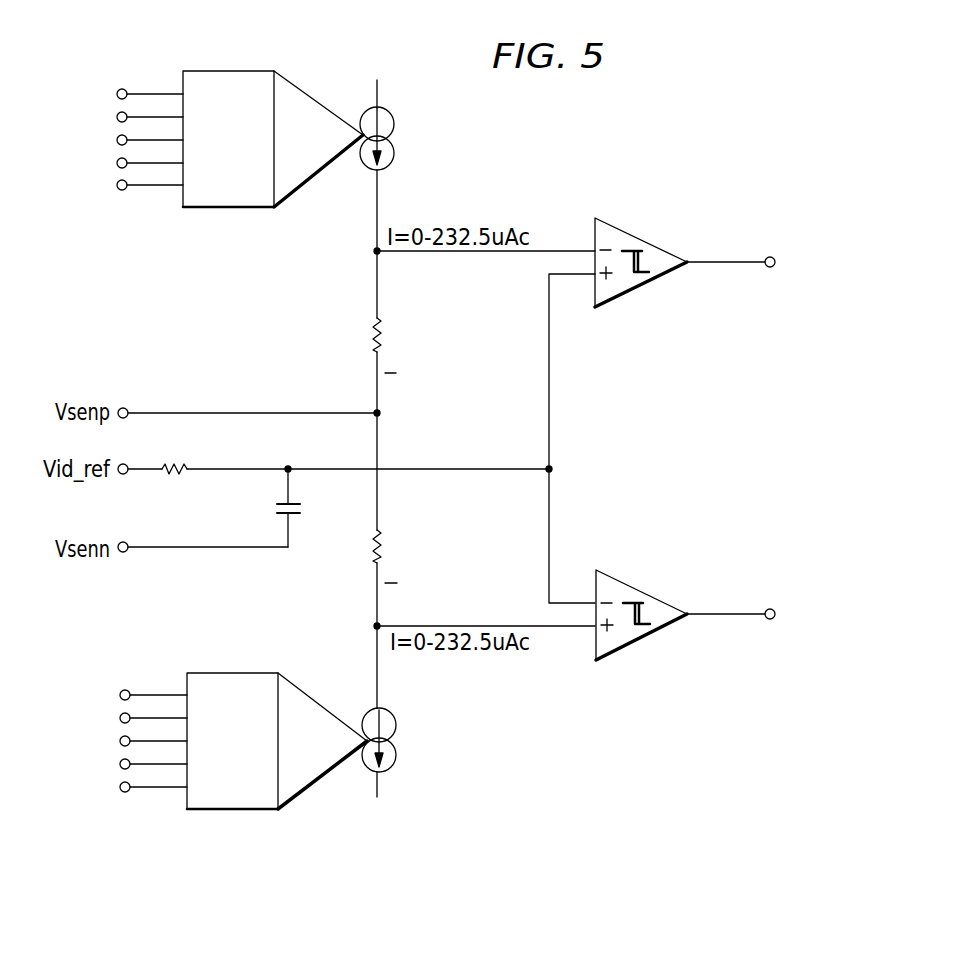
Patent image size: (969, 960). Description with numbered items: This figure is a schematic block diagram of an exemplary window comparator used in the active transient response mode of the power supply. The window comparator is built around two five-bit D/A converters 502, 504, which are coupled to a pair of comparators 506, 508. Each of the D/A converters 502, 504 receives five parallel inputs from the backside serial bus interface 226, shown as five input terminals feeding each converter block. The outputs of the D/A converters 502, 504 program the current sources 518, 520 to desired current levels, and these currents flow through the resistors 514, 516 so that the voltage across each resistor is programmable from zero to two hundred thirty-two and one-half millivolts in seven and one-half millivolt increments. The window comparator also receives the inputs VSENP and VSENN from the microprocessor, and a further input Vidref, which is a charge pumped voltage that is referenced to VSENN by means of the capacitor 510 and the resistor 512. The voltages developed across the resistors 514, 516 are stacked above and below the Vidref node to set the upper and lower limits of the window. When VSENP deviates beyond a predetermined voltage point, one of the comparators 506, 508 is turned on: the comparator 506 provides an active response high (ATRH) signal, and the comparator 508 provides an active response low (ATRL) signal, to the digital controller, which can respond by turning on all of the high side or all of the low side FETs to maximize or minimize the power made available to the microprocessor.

The 5 bit D/A converter 502 is at (227, 71).
The 5 bit D/A converter 504 is at (233, 810).
The backside serial bus interface 226 is at (59, 155).
The current source 518 is at (395, 123).
The current source 520 is at (397, 755).
The resistor 514 is at (372, 332).
The resistor 516 is at (373, 545).
The resistor 512 is at (167, 478).
The capacitor 510 is at (275, 506).
The comparator 506 is at (640, 235).
The comparator 508 is at (643, 640).